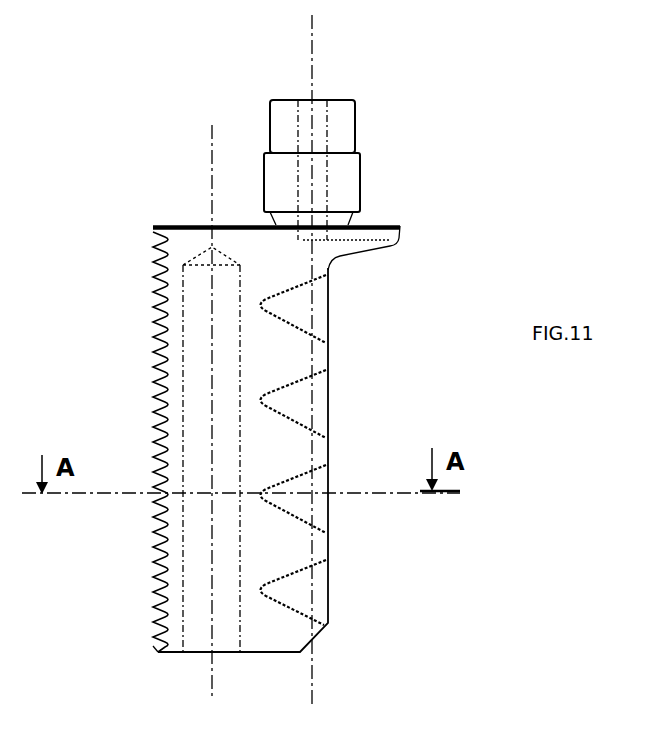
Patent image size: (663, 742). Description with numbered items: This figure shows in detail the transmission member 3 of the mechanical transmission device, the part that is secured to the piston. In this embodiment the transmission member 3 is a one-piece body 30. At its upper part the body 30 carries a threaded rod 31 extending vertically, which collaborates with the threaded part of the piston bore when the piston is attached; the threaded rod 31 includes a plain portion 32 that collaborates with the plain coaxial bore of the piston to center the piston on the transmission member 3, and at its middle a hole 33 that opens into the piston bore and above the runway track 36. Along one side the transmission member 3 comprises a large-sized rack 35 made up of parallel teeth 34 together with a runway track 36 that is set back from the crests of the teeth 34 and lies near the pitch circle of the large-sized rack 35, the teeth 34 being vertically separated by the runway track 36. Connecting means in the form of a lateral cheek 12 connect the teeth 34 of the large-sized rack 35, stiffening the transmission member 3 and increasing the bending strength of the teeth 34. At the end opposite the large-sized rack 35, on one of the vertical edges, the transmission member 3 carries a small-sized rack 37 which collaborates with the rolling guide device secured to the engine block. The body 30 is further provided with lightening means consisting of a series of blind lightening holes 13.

The transmission member 3 is at (470, 166).
The lateral cheek 12 is at (318, 312).
The blind lightening hole 13 is at (205, 622).
The body 30 is at (187, 222).
The threaded rod 31 is at (353, 183).
The plain portion 32 is at (347, 131).
The hole 33 is at (333, 80).
The parallel teeth 34 is at (290, 541).
The large-sized rack 35 is at (362, 360).
The runway track 36 is at (313, 413).
The small-sized rack 37 is at (156, 327).